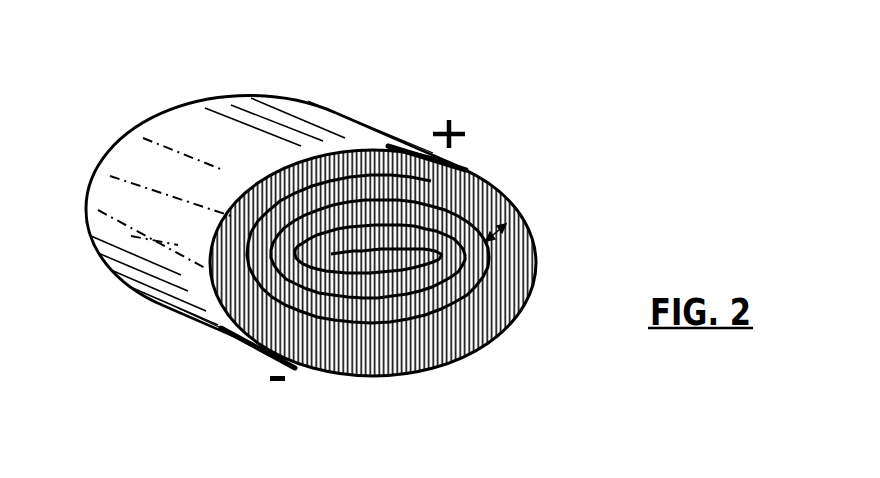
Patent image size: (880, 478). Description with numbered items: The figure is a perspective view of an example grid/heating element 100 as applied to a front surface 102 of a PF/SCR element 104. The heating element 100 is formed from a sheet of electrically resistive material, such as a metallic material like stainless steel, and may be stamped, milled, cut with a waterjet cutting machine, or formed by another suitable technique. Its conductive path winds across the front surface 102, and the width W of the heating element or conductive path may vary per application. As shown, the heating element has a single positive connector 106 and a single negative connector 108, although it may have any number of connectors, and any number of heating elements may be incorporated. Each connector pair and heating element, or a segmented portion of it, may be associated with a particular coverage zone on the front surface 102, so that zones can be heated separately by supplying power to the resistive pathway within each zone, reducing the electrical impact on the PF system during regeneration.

The grid/heating element 100 is at (362, 350).
The front surface 102 is at (467, 345).
The PF/SCR element 104 is at (197, 123).
The positive connector 106 is at (392, 140).
The negative connector 108 is at (262, 357).
The width W is at (490, 224).